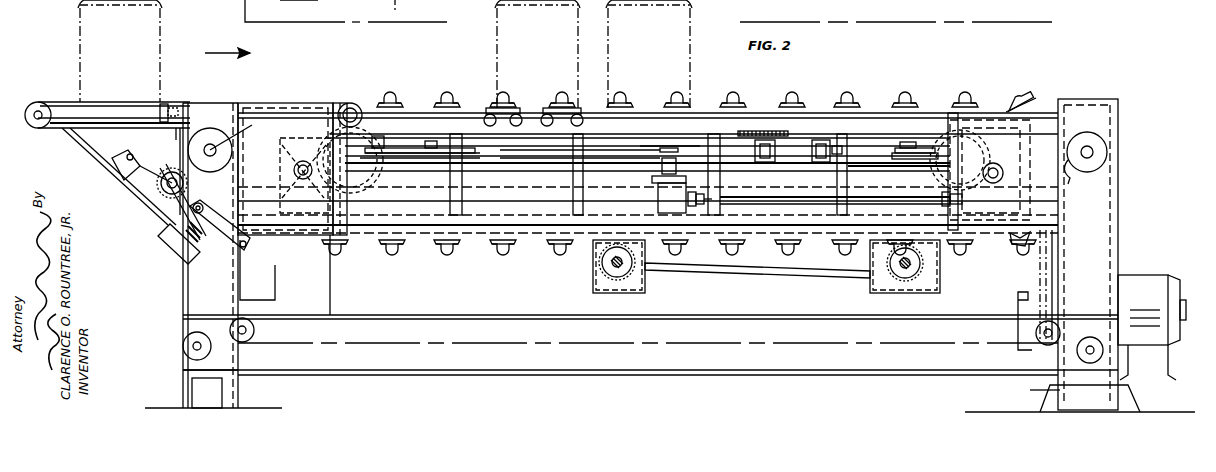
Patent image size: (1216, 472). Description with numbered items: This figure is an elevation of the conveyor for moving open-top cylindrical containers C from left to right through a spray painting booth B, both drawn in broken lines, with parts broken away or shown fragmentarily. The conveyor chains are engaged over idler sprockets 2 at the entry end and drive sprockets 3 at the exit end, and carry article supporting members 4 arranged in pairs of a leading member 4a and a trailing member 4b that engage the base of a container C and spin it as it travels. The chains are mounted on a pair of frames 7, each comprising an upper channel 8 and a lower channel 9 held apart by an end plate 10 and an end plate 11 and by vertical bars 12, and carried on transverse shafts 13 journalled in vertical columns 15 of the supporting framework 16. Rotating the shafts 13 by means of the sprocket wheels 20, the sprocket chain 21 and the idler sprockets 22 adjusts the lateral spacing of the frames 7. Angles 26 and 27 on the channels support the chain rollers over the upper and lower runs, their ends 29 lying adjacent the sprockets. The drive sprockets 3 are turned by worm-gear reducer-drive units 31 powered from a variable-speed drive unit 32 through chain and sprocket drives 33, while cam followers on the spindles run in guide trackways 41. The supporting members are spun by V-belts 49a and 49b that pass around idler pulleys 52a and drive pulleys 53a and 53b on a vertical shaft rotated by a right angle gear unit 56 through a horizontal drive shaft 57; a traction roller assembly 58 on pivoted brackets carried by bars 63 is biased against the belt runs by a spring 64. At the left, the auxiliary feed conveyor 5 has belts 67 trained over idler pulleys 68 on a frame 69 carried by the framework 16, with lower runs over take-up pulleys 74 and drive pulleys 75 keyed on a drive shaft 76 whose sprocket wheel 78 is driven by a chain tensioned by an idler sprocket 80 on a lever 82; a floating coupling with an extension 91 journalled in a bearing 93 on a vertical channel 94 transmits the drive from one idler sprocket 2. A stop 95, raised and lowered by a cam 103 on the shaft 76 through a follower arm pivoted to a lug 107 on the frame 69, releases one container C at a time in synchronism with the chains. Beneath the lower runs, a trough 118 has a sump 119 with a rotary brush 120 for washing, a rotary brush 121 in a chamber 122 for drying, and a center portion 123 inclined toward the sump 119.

The idler sprockets 2 is at (305, 102).
The drive sprockets 3 is at (994, 120).
The article supporting members 4 is at (394, 100).
The leading member 4a is at (560, 96).
The trailing member 4b is at (498, 96).
The auxiliary endless feed conveyor 5 is at (60, 100).
The frames 7 is at (703, 118).
The upper channel 8 is at (750, 126).
The lower channel 9 is at (473, 222).
The end plate 10 is at (256, 250).
The end plate 11 is at (1038, 118).
The vertical bars 12 is at (462, 180).
The shafts 13 is at (213, 132).
The vertical columns 15 is at (190, 290).
The supporting framework 16 is at (422, 323).
The sprocket wheels 20 is at (1116, 124).
The sprocket chain 21 is at (455, 358).
The idler sprockets 22 is at (182, 346).
The angle 26 is at (870, 114).
The angle 27 is at (532, 238).
The ends of the angles 29 is at (348, 112).
The worm-gear reducer-drive units 31 is at (998, 228).
The variable-speed drive unit 32 is at (1150, 280).
The chain and sprocket drives 33 is at (1040, 270).
The guide trackways 41 is at (418, 164).
The V-belt 49a is at (540, 156).
The V-belt 49b is at (392, 146).
The idler pulleys 52a is at (898, 140).
The drive pulley 53a is at (652, 144).
The drive pulley 53b is at (690, 148).
The right angle gear unit 56 is at (660, 200).
The horizontal drive shaft 57 is at (820, 176).
The slide 58 is at (782, 156).
The bars 63 is at (860, 165).
The spring 64 is at (792, 138).
The endless conveyor belts 67 is at (116, 108).
The idler pulleys 68 is at (40, 128).
The frame 69 is at (95, 102).
The take-up pulleys 74 is at (186, 143).
The drive pulleys 75 is at (160, 196).
The drive shaft 76 is at (160, 244).
The driven sprocket wheel 78 is at (160, 8).
The idler sprocket 80 is at (158, 226).
The lever 82 is at (214, 232).
The extension 91 is at (303, 178).
The bearing 93 is at (318, 0).
The vertical channel 94 is at (322, 283).
The stop 95 is at (164, 104).
The cam 103 is at (135, 150).
The lug 107 is at (116, 178).
The trough 118 is at (714, 272).
The sump 119 is at (938, 290).
The rotary brush 120 is at (878, 272).
The rotary brush 121 is at (595, 270).
The chamber 122 is at (593, 290).
The center portion 123 is at (778, 270).
The spray painting booth B is at (320, 24).
The cylindrical containers C is at (80, 30).